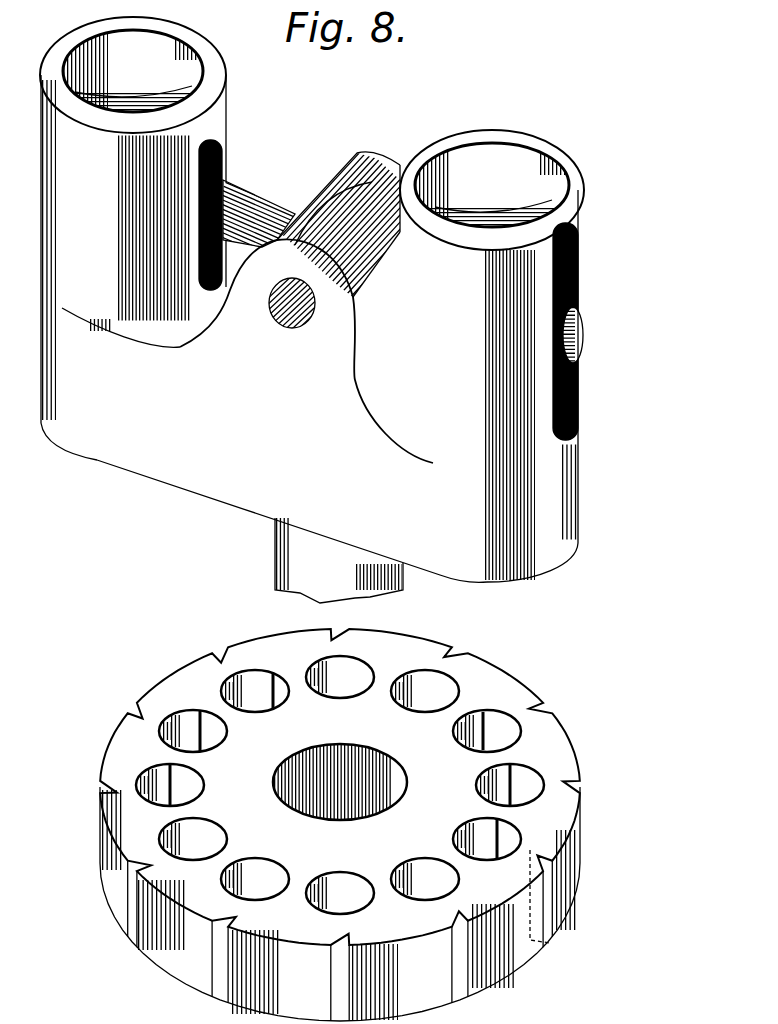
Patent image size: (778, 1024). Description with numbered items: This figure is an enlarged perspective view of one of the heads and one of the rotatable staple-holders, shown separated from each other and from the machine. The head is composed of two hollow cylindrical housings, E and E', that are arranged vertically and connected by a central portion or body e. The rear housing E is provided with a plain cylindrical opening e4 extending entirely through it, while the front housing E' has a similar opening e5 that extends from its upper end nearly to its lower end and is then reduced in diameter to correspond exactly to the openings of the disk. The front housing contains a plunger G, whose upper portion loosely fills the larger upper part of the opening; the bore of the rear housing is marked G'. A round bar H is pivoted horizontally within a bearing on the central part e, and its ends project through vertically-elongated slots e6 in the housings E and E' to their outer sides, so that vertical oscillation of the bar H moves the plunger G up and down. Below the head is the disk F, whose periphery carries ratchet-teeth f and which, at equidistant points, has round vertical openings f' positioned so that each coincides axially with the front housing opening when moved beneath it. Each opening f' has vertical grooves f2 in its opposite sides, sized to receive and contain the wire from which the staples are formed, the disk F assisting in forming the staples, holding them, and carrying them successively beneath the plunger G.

The rear housing E is at (133, 238).
The front housing E' is at (492, 356).
The plunger G is at (150, 101).
The bore of bearing G' is at (506, 213).
The round bar H is at (292, 211).
The central portion or body e is at (292, 377).
The plain cylindrical opening e4 is at (145, 69).
The opening e5 is at (491, 173).
The vertically-elongated slot e6 is at (224, 188).
The disk F is at (340, 825).
The ratchet-teeth f is at (333, 850).
The round vertical opening f' is at (351, 785).
The vertical groove f2 is at (282, 697).